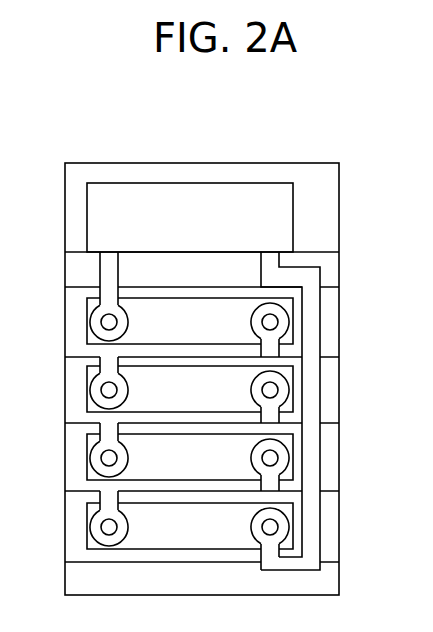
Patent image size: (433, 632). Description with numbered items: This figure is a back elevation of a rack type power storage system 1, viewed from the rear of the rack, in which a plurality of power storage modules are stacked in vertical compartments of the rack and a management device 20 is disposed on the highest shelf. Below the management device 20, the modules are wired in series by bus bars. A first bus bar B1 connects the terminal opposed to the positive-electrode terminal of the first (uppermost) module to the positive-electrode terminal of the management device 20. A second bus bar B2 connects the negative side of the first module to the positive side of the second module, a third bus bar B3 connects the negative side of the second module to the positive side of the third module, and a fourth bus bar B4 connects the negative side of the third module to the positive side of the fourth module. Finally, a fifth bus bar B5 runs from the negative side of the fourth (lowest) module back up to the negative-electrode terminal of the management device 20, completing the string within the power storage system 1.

The rack type power storage system 1 is at (204, 117).
The management device 20 is at (295, 220).
The first bus bar B1 is at (97, 275).
The second bus bar B2 is at (97, 366).
The third bus bar B3 is at (97, 435).
The fourth bus bar B4 is at (97, 502).
The fifth bus bar B5 is at (320, 322).